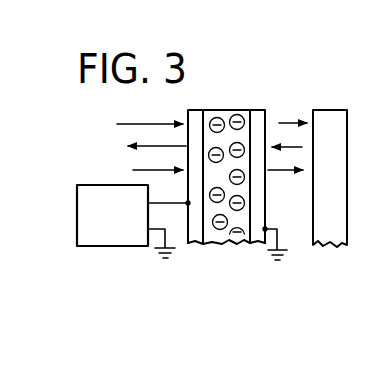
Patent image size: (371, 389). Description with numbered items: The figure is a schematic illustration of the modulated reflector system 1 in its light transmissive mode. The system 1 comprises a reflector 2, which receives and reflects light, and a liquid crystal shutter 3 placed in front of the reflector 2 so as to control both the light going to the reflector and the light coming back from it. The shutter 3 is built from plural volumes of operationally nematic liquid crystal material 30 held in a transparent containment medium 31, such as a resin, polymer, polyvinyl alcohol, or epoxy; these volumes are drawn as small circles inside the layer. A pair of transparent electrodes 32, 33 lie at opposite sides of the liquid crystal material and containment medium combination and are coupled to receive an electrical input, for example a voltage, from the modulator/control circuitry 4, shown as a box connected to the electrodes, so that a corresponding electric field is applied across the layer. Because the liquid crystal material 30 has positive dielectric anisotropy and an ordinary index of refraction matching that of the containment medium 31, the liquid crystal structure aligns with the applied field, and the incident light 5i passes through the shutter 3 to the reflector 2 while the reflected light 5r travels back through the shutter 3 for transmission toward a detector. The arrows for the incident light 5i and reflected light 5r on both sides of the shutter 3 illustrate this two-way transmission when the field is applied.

The modulated reflector system 1 is at (300, 84).
The reflector 2 is at (329, 110).
The shutter 3 is at (155, 102).
The modulator/control circuitry 4 is at (80, 185).
The liquid crystal material 30 is at (217, 112).
The transparent containment medium 31 is at (228, 110).
The transparent electrode 32 is at (188, 120).
The transparent electrode 33 is at (262, 109).
The incident light 5i is at (126, 124).
The reflected light 5r is at (148, 146).